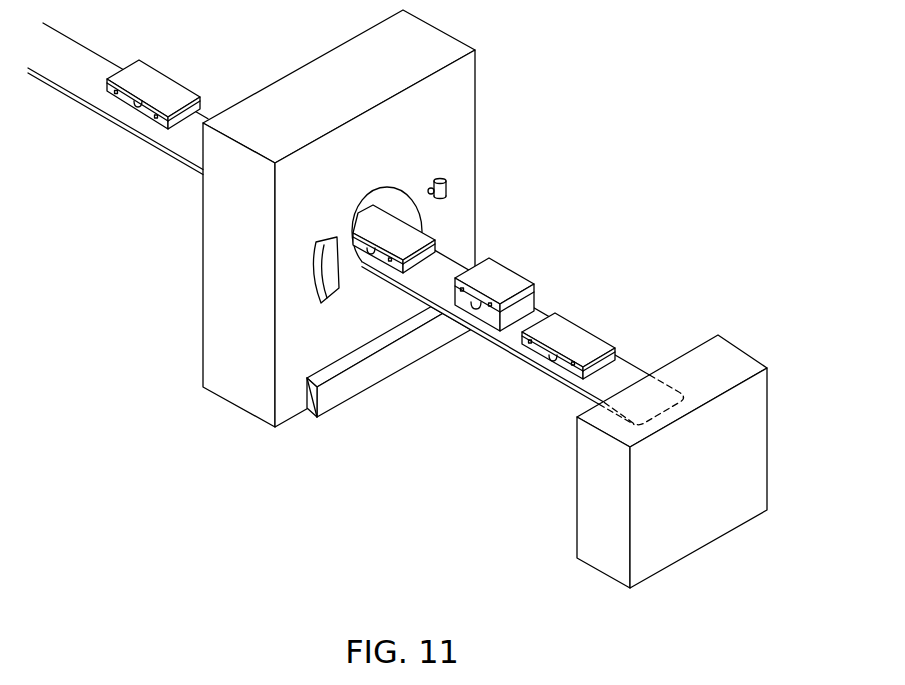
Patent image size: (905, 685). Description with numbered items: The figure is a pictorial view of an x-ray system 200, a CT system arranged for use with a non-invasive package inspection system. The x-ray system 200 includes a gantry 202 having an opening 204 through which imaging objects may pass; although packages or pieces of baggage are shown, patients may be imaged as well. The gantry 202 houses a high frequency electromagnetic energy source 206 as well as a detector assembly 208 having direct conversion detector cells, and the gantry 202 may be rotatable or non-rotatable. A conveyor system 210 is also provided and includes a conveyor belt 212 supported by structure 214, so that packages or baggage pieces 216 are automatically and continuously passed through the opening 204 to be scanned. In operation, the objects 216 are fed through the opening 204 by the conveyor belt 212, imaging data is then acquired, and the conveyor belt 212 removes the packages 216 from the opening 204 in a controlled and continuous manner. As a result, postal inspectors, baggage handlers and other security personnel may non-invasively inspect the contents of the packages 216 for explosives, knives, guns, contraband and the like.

The x-ray system 200 is at (431, 299).
The gantry 202 is at (423, 121).
The opening 204 is at (409, 182).
The high frequency electromagnetic energy source 206 is at (448, 189).
The detector assembly 208 is at (331, 253).
The conveyor system 210 is at (431, 305).
The conveyor belt 212 is at (182, 142).
The structure 214 is at (768, 418).
The packages or baggage pieces 216 is at (158, 88).